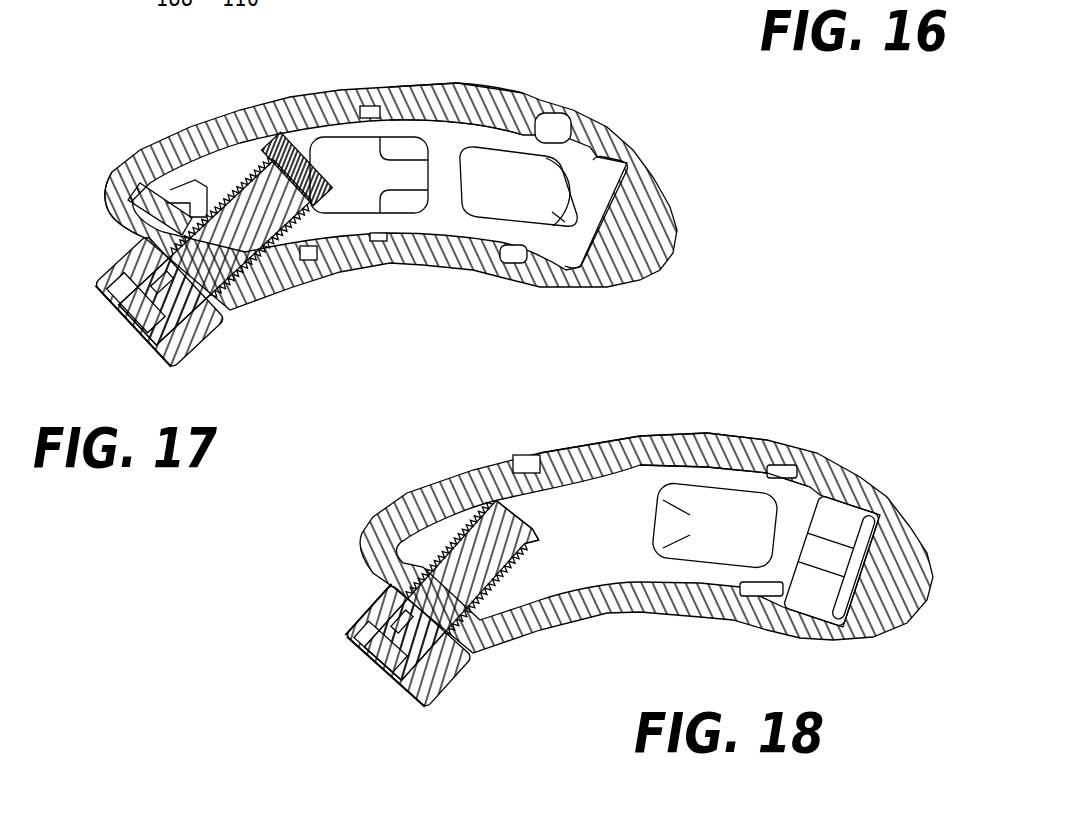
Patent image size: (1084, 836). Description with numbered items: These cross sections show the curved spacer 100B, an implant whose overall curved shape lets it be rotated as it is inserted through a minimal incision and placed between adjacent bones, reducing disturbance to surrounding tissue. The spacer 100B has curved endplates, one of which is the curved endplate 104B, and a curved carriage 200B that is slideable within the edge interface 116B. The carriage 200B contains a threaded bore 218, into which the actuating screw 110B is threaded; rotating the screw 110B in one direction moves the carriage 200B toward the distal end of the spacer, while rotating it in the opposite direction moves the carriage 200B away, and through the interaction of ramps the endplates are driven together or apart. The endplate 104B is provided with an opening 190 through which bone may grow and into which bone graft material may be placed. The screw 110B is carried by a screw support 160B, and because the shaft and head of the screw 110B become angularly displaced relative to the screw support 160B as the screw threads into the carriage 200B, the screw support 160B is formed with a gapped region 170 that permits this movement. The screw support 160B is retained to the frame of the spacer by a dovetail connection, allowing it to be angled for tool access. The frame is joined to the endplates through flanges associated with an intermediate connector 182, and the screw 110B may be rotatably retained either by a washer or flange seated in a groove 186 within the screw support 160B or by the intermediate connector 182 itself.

In FIG. 17, the spacer 100B is at (724, 167).
In FIG. 18, the spacer 100B is at (810, 377).
In FIG. 17, the curved endplate 104B is at (458, 95).
In FIG. 18, the curved endplate 104B is at (650, 440).
In FIG. 17, the edge interface 116B is at (489, 116).
In FIG. 18, the edge interface 116B is at (716, 460).
In FIG. 17, the curved carriage 200B is at (593, 163).
In FIG. 18, the curved carriage 200B is at (803, 497).
In FIG. 17, the opening 190 is at (372, 160).
In FIG. 17, the actuating screw 110B is at (262, 258).
In FIG. 18, the actuating screw 110B is at (458, 598).
In FIG. 17, the threaded bore 218 is at (303, 146).
In FIG. 18, the threaded bore 218 is at (461, 521).
In FIG. 17, the screw support 160B is at (225, 326).
In FIG. 18, the screw support 160B is at (462, 677).
In FIG. 17, the gapped region 170 is at (150, 238).
In FIG. 18, the gapped region 170 is at (392, 585).
In FIG. 17, the intermediate connector 182 is at (199, 210).
In FIG. 17, the groove 186 is at (183, 362).
In FIG. 18, the groove 186 is at (347, 627).